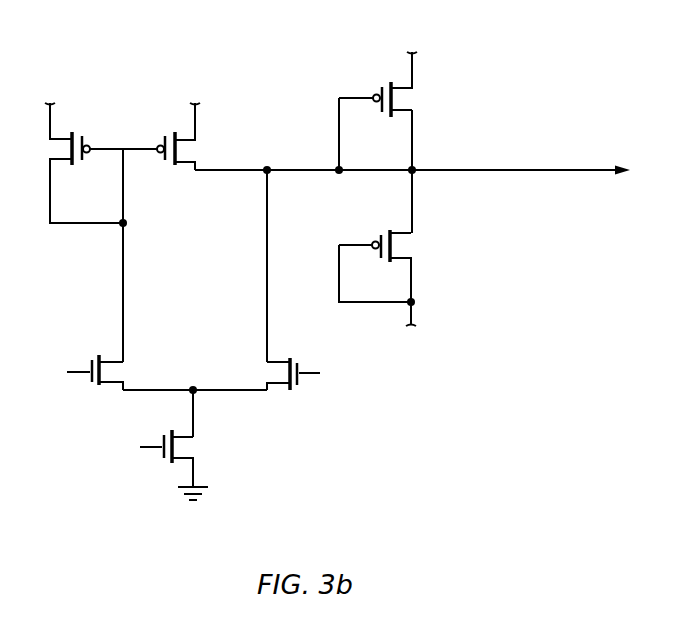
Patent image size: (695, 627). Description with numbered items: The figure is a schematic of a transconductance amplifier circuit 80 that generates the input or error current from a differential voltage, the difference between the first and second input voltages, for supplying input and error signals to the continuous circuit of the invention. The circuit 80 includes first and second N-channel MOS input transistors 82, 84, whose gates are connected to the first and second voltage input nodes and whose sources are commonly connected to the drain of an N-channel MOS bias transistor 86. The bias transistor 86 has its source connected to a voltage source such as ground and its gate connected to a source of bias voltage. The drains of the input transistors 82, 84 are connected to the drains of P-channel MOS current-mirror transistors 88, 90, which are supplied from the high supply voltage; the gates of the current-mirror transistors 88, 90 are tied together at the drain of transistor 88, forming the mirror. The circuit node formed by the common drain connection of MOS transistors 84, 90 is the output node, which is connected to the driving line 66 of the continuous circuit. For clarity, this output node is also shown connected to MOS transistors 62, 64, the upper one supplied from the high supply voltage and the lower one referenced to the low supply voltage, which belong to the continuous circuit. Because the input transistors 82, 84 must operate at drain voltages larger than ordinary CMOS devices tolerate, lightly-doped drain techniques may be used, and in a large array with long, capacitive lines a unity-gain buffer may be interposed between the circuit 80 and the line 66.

The transconductance amplifier circuit 80 is at (293, 71).
The P-channel MOS current-mirror transistor 88 is at (74, 131).
The P-channel MOS current-mirror transistor 90 is at (197, 151).
The MOS transistor 62 is at (410, 99).
The MOS transistor 64 is at (408, 247).
The driving line 66 is at (543, 170).
The first N-channel MOS input transistor 82 is at (97, 388).
The second N-channel MOS input transistor 84 is at (265, 372).
The N-channel MOS bias transistor 86 is at (200, 447).